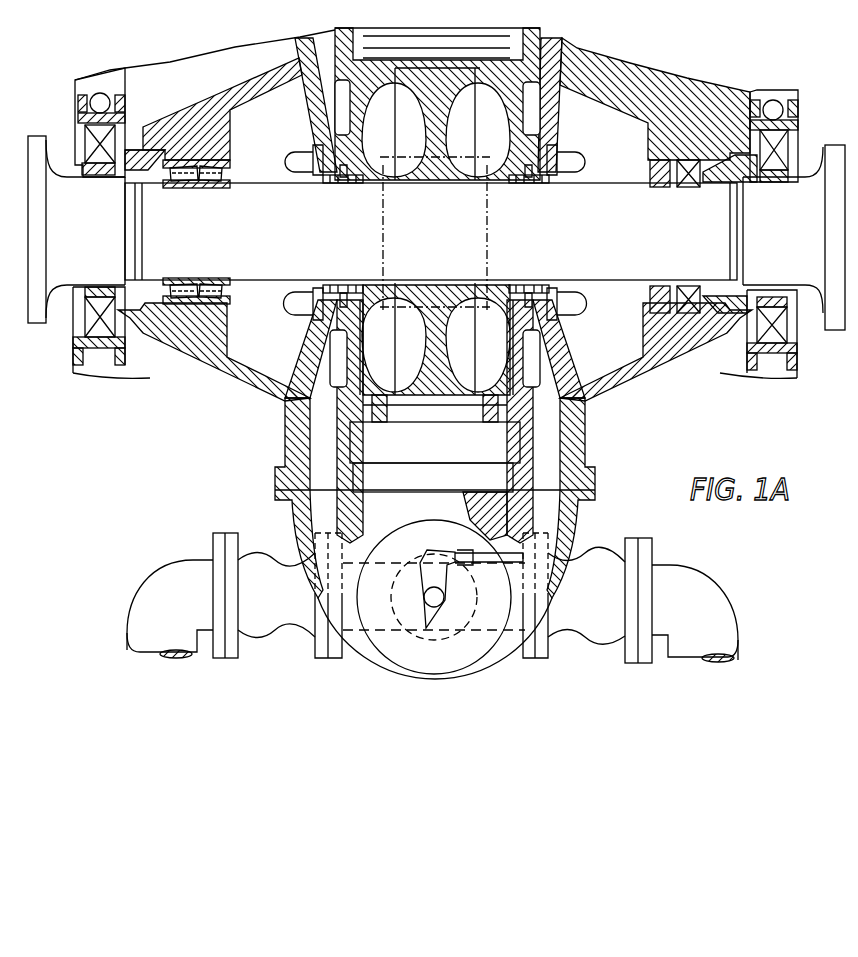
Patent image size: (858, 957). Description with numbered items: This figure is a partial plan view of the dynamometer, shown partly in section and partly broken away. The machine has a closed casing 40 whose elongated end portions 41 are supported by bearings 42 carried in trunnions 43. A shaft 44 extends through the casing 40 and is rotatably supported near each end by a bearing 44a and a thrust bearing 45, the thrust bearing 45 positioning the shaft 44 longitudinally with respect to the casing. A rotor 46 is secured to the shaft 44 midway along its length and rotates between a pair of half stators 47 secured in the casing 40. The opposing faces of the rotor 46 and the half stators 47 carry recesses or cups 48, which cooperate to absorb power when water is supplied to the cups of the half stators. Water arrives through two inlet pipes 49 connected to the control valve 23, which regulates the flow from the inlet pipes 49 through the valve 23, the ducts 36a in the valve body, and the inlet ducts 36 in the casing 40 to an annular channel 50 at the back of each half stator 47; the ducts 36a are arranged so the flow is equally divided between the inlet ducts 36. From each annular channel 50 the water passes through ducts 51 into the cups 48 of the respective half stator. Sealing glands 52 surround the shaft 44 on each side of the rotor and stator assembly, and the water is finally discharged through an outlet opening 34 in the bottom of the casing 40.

The control valve 23 is at (418, 606).
The outlet opening 34 is at (381, 228).
The inlet ducts 36 is at (305, 483).
The ducts 36a is at (313, 500).
The casing 40 is at (435, 538).
The elongated end portions 41 is at (200, 362).
The bearings 42 is at (783, 150).
The trunnions 43 is at (797, 120).
The shaft 44 is at (622, 244).
The bearing 44a is at (687, 188).
The thrust bearing 45 is at (197, 280).
The rotor 46 is at (440, 395).
The half stators 47 is at (352, 356).
The cups 48 is at (447, 150).
The inlet pipes 49 is at (162, 588).
The annular channel 50 is at (335, 365).
The ducts 51 is at (359, 345).
The sealing glands 52 is at (352, 183).